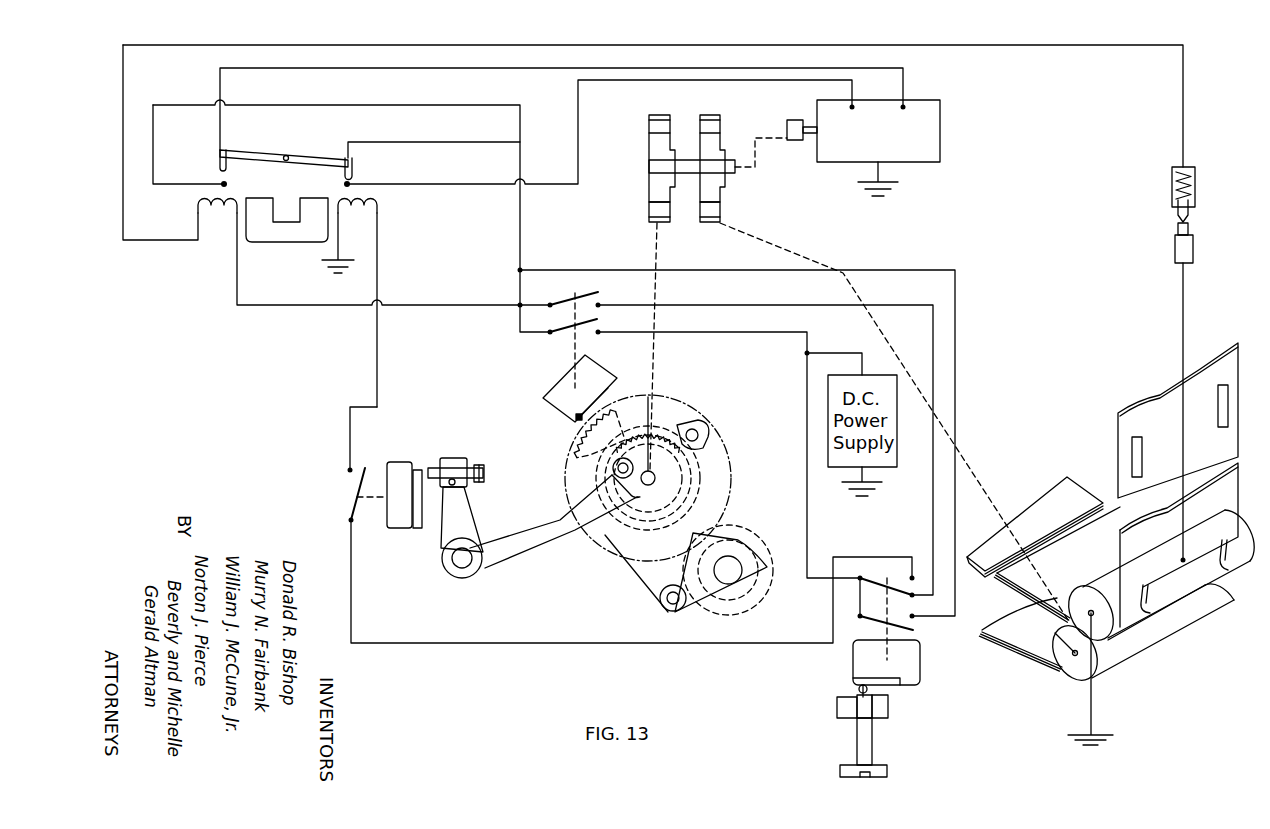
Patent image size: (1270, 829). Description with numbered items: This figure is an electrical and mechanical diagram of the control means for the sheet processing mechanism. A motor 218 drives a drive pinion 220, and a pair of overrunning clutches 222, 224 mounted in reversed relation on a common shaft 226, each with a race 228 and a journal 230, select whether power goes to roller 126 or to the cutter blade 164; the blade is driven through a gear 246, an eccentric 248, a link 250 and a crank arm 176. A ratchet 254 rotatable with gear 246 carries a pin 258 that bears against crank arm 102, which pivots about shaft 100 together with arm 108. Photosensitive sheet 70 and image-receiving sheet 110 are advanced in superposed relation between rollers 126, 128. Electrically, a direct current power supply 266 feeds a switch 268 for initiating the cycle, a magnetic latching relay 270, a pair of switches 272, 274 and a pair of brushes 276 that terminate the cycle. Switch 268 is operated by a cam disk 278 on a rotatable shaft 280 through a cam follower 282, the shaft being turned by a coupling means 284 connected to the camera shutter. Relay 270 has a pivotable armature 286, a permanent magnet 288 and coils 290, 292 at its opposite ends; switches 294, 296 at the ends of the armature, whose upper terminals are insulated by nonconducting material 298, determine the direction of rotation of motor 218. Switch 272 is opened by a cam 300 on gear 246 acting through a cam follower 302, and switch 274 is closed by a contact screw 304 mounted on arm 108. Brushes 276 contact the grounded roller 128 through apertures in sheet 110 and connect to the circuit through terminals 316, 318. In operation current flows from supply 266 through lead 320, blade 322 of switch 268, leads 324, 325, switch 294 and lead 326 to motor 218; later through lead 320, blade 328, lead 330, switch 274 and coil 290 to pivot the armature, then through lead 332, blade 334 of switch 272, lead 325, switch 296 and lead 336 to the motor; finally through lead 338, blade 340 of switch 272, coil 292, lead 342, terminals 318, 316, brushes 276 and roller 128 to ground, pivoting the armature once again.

The photosensitive sheet 70 is at (1022, 594).
The shaft 100 is at (458, 568).
The crank arm 102 is at (510, 543).
The arm 108 is at (447, 525).
The image-receiving sheet 110 is at (1084, 534).
The roller 126 is at (1067, 670).
The roller 128 is at (1085, 594).
The blade 164 is at (729, 528).
The crank arm 176 is at (700, 604).
The motor 218 is at (878, 148).
The drive pinion 220 is at (797, 140).
The overrunning clutch 222 is at (710, 115).
The overrunning clutch 224 is at (631, 154).
The common shaft 226 is at (649, 181).
The race 228 is at (649, 122).
The journal 230 is at (649, 150).
The gear 246 is at (678, 398).
The eccentric 248 is at (698, 492).
The link 250 is at (642, 570).
The ratchet 254 is at (654, 434).
The pin 258 is at (580, 477).
The direct current power supply 266 is at (887, 466).
The switch 268 is at (863, 628).
The magnetic latching relay 270 is at (341, 152).
The switch 272 is at (568, 339).
The switch 274 is at (367, 462).
The brushes 276 is at (1149, 614).
The cam disk 278 is at (888, 702).
The rotatable shaft 280 is at (872, 733).
The cam follower 282 is at (855, 689).
The coupling means 284 is at (887, 771).
The armature 286 is at (250, 153).
The permanent magnet 288 is at (259, 242).
The coil 290 is at (377, 210).
The coil 292 is at (198, 216).
The switch 294 is at (362, 171).
The switch 296 is at (233, 178).
The nonconducting material 298 is at (218, 167).
The cam 300 is at (568, 435).
The cam follower 302 is at (565, 418).
The contact screw 304 is at (428, 464).
The terminal 316 is at (1175, 248).
The terminal 318 is at (1172, 182).
The lead 320 is at (807, 428).
The blade 322 is at (907, 622).
The lead 324 is at (955, 391).
The lead 325 is at (520, 210).
The lead 326 is at (578, 123).
The blade 328 is at (887, 579).
The lead 330 is at (527, 643).
The lead 332 is at (760, 332).
The blade 334 is at (598, 320).
The lead 336 is at (508, 68).
The lead 338 is at (933, 532).
The blade 340 is at (575, 301).
The lead 342 is at (703, 45).